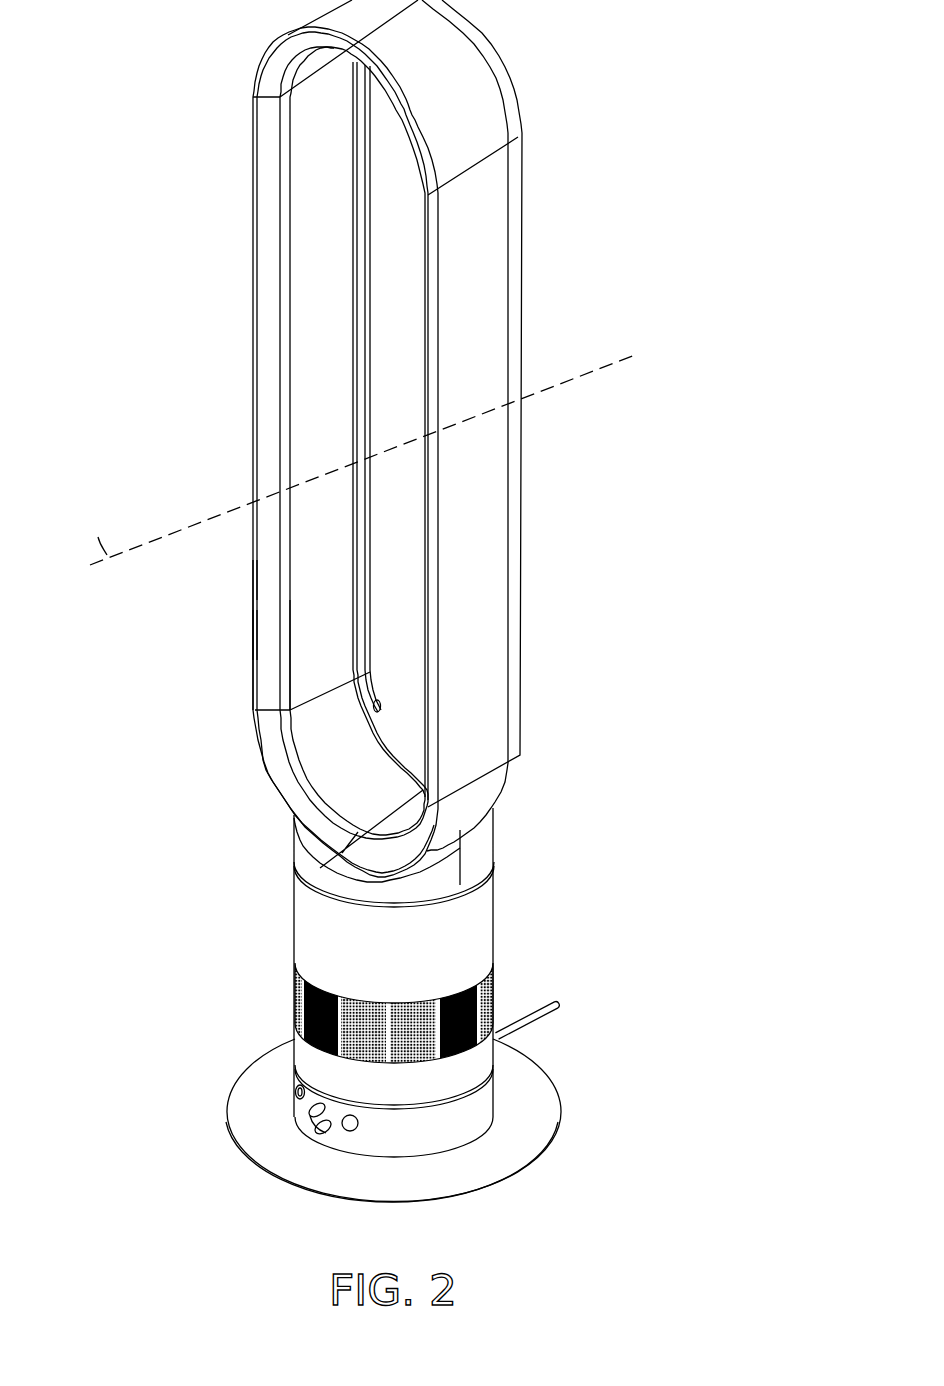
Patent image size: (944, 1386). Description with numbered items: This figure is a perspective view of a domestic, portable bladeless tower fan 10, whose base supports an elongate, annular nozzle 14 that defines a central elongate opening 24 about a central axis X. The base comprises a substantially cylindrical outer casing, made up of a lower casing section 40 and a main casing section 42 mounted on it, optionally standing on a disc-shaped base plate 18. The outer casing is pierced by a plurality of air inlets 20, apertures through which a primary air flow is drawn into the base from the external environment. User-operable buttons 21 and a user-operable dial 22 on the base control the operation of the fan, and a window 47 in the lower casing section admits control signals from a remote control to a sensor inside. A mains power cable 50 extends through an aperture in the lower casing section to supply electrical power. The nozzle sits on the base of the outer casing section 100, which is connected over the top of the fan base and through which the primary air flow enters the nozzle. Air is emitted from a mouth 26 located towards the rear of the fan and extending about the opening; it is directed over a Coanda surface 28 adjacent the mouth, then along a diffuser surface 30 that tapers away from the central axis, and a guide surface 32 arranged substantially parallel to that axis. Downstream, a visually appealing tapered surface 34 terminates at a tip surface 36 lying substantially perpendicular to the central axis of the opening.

The tower fan 10 is at (580, 204).
The nozzle 14 is at (552, 549).
The base plate 18 is at (547, 1093).
The air inlets 20 is at (294, 985).
The user-operable buttons 21 is at (296, 1090).
The user-operable dial 22 is at (313, 1117).
The central elongate opening 24 is at (322, 738).
The mouth 26 is at (378, 706).
The Coanda surface 28 is at (360, 355).
The diffuser surface 30 is at (307, 242).
The guide surface 32 is at (283, 327).
The tapered surface 34 is at (262, 580).
The tip surface 36 is at (258, 630).
The lower casing section 40 is at (473, 1108).
The main casing section 42 is at (483, 897).
The window 47 is at (322, 1136).
The mains power cable 50 is at (543, 1004).
The base of the outer casing section 100 is at (483, 833).